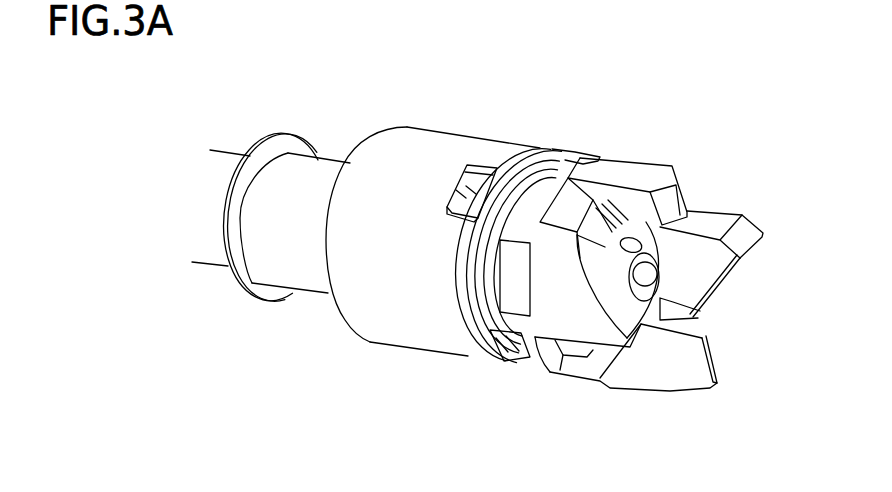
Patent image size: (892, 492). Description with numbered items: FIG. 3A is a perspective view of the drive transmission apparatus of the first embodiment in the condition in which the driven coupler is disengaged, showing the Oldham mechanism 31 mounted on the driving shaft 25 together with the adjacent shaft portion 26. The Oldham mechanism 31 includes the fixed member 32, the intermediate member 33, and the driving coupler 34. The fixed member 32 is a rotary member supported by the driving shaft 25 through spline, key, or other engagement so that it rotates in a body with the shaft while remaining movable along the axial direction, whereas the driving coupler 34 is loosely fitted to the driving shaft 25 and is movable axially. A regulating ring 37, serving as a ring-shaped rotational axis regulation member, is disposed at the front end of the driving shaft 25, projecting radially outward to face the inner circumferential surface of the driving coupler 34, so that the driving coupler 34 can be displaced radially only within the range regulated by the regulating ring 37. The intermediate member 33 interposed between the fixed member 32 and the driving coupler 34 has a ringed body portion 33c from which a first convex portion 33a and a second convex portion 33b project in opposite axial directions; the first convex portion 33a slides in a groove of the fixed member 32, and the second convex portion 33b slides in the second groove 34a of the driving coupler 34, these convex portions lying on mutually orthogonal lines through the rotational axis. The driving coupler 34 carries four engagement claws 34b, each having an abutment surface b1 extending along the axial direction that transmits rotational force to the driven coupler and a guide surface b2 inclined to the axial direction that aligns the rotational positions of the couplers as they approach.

The driving shaft 25 is at (211, 252).
The shaft 26 is at (315, 275).
The Oldham mechanism 31 is at (567, 113).
The fixed member 32 is at (392, 332).
The intermediate member 33 is at (470, 337).
The first convex portion 33a is at (480, 160).
The second convex portion 33b is at (510, 363).
The ringed body portion 33c is at (542, 145).
The driving coupler 34 is at (585, 385).
The second groove 34a is at (548, 372).
The engagement claw 34b is at (717, 388).
The regulating ring 37 is at (642, 221).
The abutment surface b1 is at (717, 215).
The guide surface b2 is at (725, 282).